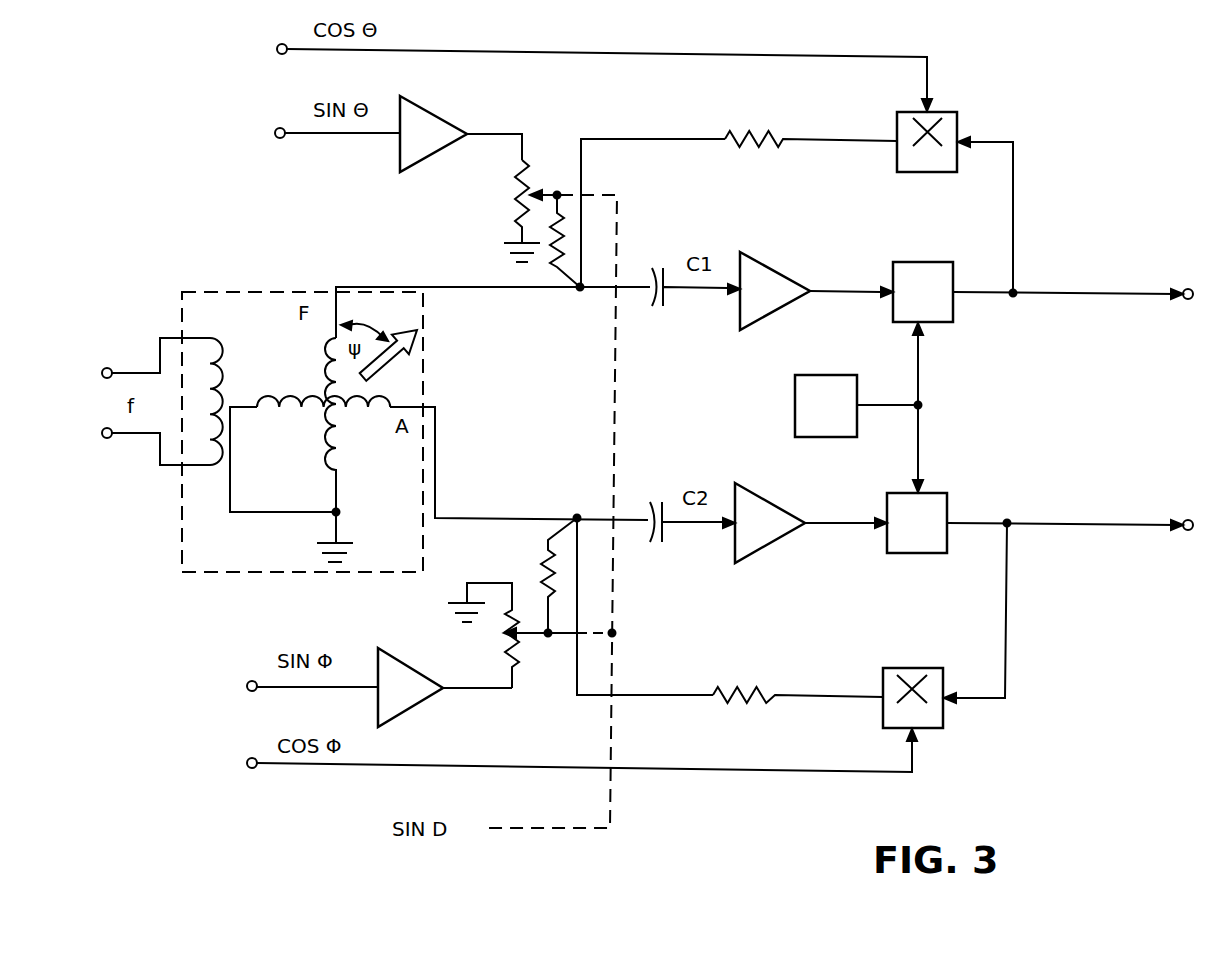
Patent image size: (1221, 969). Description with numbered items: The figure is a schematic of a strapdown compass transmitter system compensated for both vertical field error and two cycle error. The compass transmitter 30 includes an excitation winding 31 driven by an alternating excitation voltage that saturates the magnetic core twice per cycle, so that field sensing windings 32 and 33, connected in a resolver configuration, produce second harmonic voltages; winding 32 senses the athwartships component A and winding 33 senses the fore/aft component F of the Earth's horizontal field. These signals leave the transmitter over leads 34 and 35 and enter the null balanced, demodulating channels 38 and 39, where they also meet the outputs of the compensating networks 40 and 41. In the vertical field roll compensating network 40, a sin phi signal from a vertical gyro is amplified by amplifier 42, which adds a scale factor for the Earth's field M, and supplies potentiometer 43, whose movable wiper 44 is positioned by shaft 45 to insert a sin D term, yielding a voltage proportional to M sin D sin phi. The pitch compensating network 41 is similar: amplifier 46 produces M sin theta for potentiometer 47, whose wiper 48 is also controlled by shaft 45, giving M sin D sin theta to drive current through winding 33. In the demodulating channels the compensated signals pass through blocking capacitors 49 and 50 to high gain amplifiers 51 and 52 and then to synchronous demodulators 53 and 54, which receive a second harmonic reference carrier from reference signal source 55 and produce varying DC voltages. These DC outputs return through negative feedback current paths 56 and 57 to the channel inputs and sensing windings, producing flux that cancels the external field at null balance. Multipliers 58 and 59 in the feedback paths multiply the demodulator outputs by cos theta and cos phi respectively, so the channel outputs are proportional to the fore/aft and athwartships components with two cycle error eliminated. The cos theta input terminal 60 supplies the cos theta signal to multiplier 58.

The strapdown compass transmitter 30 is at (291, 432).
The excitation winding 31 is at (222, 370).
The field sensing winding 32 is at (392, 397).
The field sensing winding 33 is at (327, 367).
The lead 34 is at (413, 283).
The lead 35 is at (436, 457).
The null balanced demodulating channel 38 is at (713, 345).
The null balanced demodulating channel 39 is at (751, 445).
The vertical field roll compensating network 40 is at (296, 615).
The pitch compensating network 41 is at (364, 190).
The amplifier 42 is at (410, 710).
The potentiometer 43 is at (478, 636).
The movable wiper 44 is at (530, 640).
The shaft 45 is at (621, 207).
The amplifier 46 is at (453, 142).
The potentiometer 47 is at (532, 157).
The wiper 48 is at (537, 192).
The blocking capacitor 49 is at (652, 300).
The blocking capacitor 50 is at (658, 498).
The high gain amplifier 51 is at (767, 263).
The high gain amplifier 52 is at (763, 497).
The synchronous demodulator 53 is at (915, 261).
The synchronous demodulator 54 is at (937, 493).
The reference signal source 55 is at (820, 373).
The negative feedback current path 56 is at (771, 180).
The negative feedback current path 57 is at (776, 659).
The multiplier 58 is at (947, 111).
The multiplier 59 is at (905, 668).
The cos theta input terminal 60 is at (279, 44).